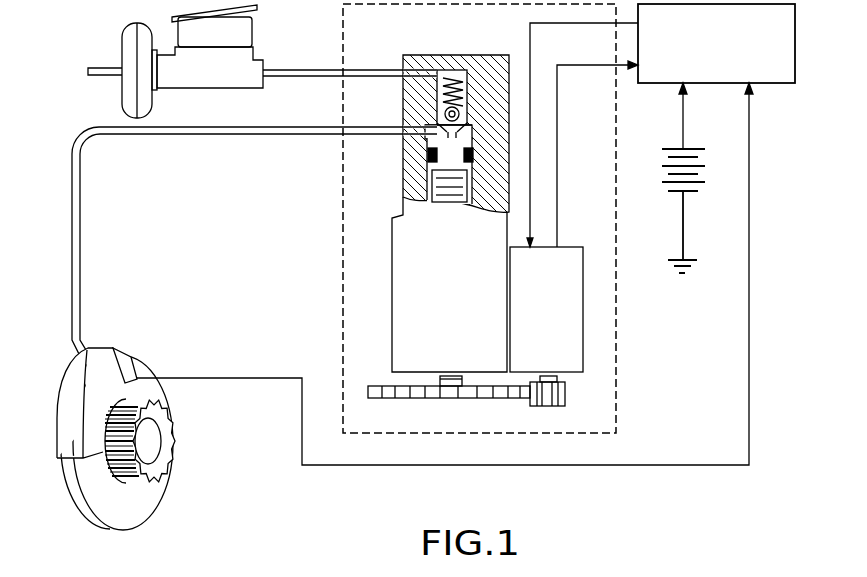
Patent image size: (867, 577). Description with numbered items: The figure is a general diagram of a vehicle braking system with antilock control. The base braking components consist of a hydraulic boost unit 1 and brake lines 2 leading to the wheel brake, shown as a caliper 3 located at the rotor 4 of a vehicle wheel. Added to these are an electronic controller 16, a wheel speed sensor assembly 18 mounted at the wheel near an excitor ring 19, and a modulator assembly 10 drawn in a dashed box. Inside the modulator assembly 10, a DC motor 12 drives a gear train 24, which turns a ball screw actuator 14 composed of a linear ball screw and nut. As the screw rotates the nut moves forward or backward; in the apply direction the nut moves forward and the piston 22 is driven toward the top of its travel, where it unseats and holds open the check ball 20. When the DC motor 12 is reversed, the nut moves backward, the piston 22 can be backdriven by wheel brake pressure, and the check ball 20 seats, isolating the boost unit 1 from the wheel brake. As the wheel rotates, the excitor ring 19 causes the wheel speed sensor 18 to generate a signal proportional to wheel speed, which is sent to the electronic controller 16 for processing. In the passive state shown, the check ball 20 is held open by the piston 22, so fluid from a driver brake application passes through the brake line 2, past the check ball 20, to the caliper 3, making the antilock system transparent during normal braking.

The hydraulic boost unit 1 is at (127, 57).
The brake lines 2 is at (333, 75).
The caliper 3 is at (107, 385).
The rotor 4 is at (133, 503).
The modulator assembly 10 is at (343, 248).
The DC motor 12 is at (570, 267).
The ball screw actuator 14 is at (412, 313).
The electronic controller 16 is at (778, 68).
The wheel speed sensor assembly 18 is at (128, 368).
The excitor ring 19 is at (165, 438).
The check ball 20 is at (442, 117).
The piston 22 is at (440, 168).
The gear train 24 is at (392, 392).